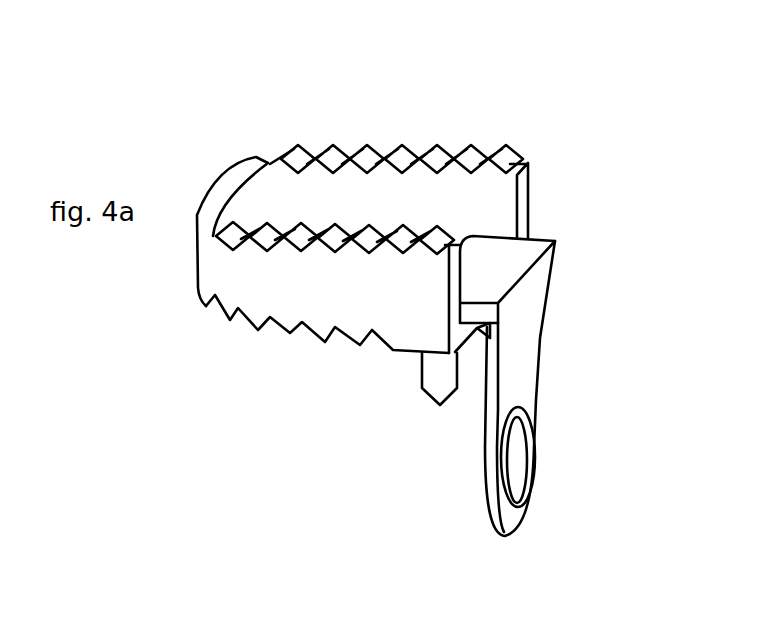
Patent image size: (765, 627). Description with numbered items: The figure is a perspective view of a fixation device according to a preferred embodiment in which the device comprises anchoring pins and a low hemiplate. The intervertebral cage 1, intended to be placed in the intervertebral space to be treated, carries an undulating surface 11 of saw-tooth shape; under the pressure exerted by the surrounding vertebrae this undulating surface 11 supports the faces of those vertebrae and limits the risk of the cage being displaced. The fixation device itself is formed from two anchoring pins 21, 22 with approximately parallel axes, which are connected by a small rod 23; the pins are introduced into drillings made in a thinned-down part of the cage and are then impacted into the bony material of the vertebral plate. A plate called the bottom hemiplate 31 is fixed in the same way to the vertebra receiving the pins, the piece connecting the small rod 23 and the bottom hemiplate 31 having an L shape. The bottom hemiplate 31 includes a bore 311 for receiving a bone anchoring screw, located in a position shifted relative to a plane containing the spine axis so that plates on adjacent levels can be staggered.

The intervertebral cage 1 is at (298, 297).
The undulating surface 11 is at (372, 150).
The anchoring pin 21 is at (432, 386).
The anchoring pin 22 is at (477, 332).
The small rod 23 is at (487, 253).
The bottom hemiplate 31 is at (583, 388).
The bore 311 is at (515, 452).